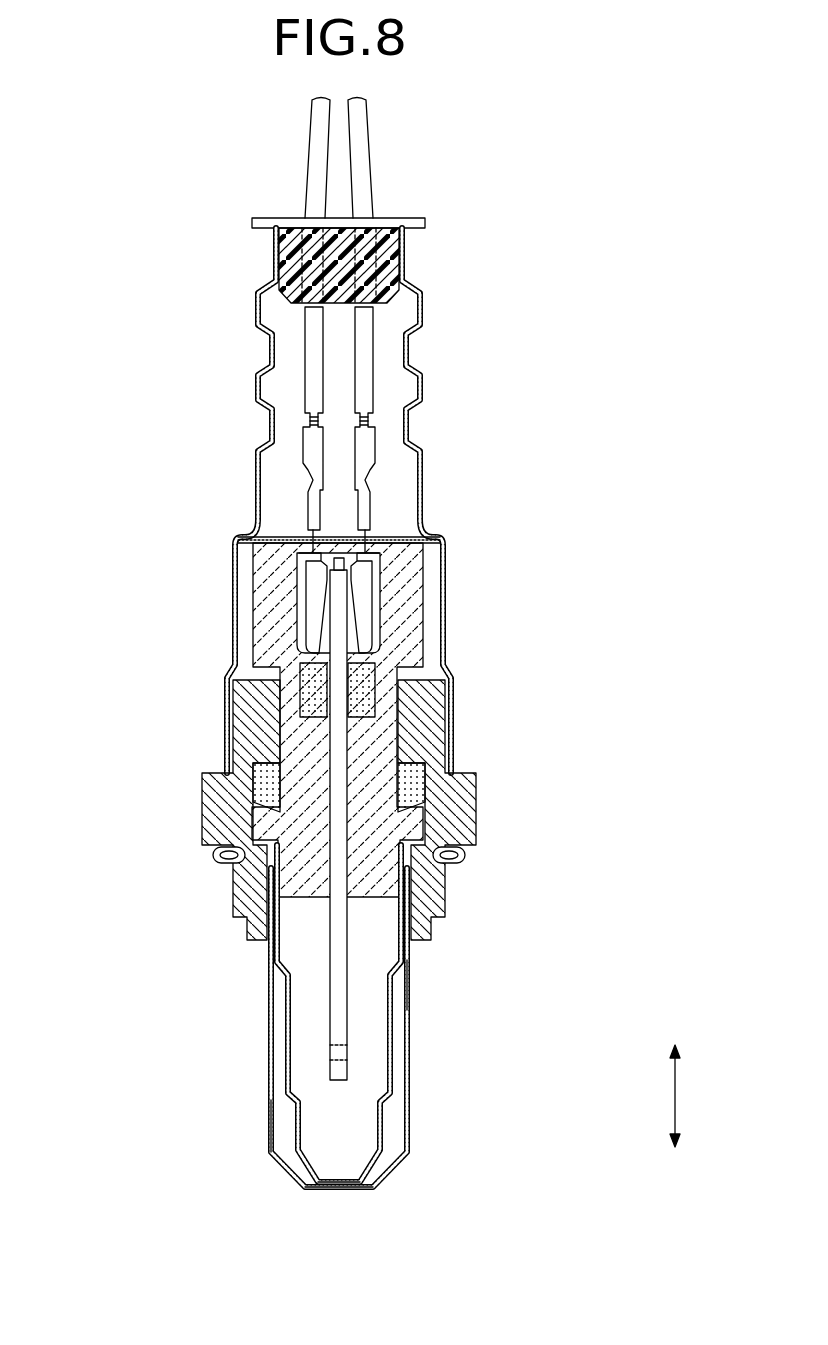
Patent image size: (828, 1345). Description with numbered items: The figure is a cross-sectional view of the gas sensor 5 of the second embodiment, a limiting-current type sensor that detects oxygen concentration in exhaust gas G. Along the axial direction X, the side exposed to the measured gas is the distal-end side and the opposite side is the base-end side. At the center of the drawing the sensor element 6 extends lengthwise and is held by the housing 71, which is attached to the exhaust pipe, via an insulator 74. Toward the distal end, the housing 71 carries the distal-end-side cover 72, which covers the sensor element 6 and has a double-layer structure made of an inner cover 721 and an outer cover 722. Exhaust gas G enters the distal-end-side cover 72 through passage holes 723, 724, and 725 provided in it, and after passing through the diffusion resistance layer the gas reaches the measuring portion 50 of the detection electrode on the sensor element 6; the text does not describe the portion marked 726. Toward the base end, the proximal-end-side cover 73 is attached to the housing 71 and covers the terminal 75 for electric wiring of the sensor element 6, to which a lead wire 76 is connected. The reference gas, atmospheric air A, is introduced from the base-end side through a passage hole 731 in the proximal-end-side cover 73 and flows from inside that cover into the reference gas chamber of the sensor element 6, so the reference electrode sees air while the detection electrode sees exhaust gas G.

The gas sensor 5 is at (312, 686).
The sensor element 6 is at (435, 839).
The measuring portion 50 is at (330, 1043).
The housing 71 is at (225, 808).
The distal-end-side cover 72 is at (282, 1059).
The inner cover 721 is at (313, 997).
The outer cover 722 is at (270, 1043).
The passage hole 723 is at (334, 1188).
The passage hole 724 is at (358, 1188).
The passage hole 725 is at (272, 1145).
The outer cover proximal side portion 726 is at (405, 1002).
The proximal-end-side cover 73 is at (425, 490).
The passage hole 731 is at (388, 321).
The insulator 74 is at (380, 830).
The terminal 75 is at (378, 598).
The lead wire 76 is at (315, 372).
The atmospheric air A is at (385, 362).
The exhaust gas G is at (272, 1130).
The axial direction X is at (680, 1095).